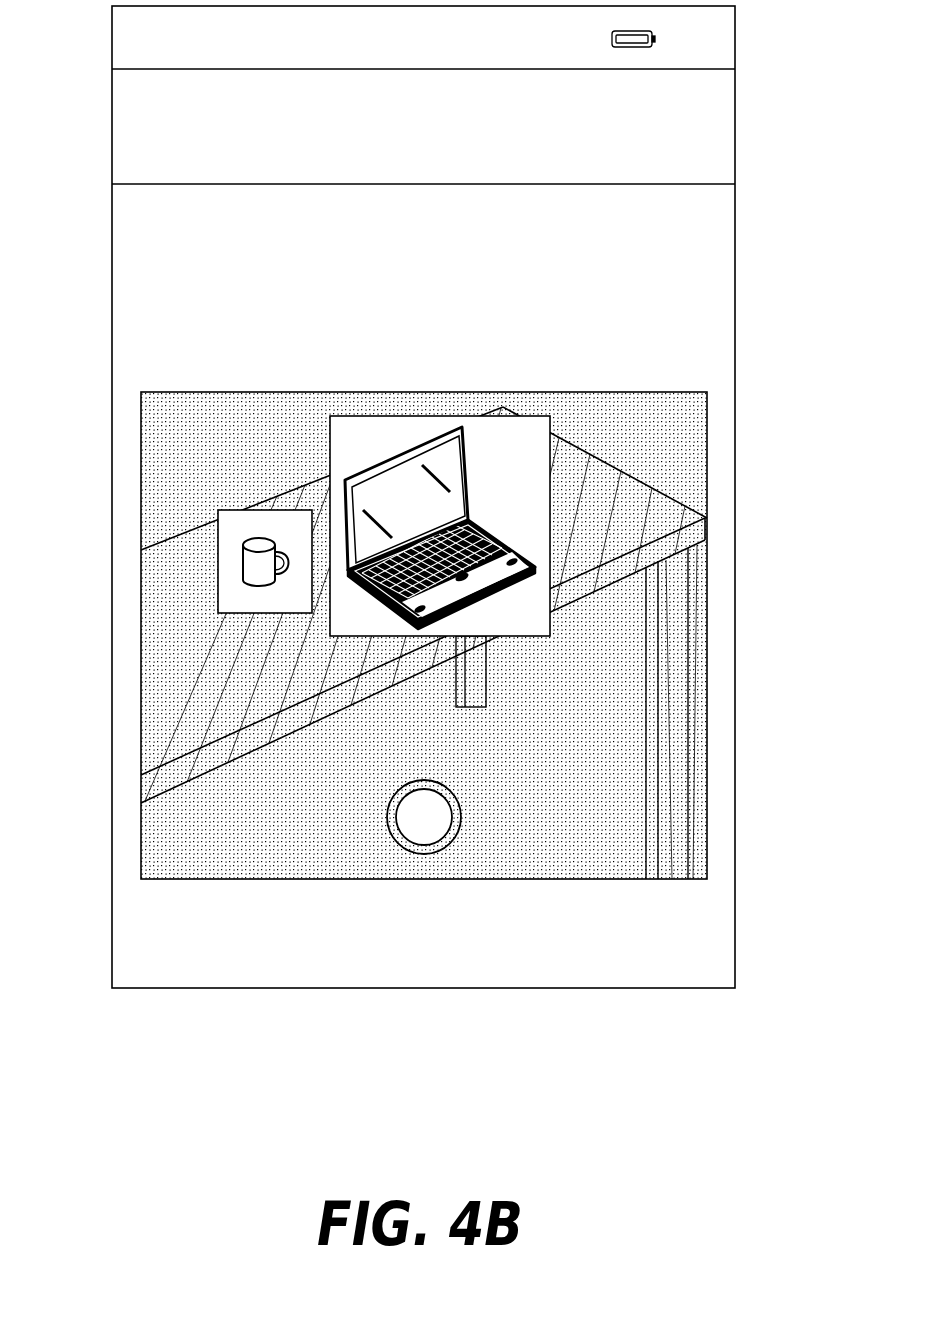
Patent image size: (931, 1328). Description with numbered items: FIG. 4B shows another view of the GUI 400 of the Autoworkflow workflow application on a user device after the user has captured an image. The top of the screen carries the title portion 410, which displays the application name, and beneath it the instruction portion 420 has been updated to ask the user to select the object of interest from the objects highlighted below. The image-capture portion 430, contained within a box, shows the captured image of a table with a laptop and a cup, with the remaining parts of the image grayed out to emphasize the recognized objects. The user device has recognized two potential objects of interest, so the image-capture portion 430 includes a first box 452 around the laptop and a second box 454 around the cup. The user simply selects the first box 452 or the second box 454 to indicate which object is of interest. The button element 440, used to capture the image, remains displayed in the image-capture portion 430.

The GUI 400 is at (735, 120).
The title portion 410 is at (515, 137).
The instruction portion 420 is at (598, 287).
The image-capture portion 430 is at (707, 412).
The button element 440 is at (423, 830).
The first box 452 is at (423, 416).
The second box 454 is at (218, 562).